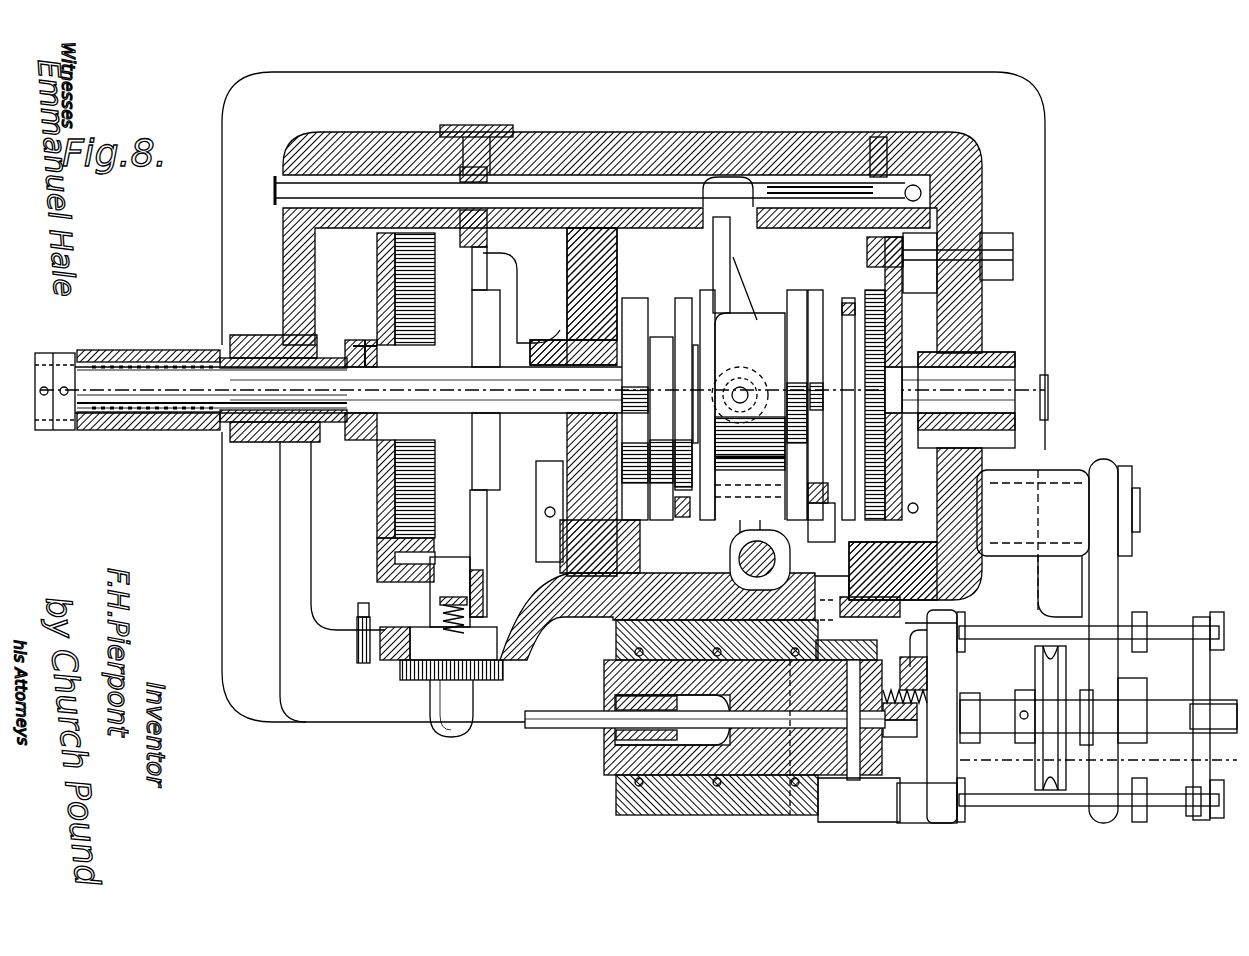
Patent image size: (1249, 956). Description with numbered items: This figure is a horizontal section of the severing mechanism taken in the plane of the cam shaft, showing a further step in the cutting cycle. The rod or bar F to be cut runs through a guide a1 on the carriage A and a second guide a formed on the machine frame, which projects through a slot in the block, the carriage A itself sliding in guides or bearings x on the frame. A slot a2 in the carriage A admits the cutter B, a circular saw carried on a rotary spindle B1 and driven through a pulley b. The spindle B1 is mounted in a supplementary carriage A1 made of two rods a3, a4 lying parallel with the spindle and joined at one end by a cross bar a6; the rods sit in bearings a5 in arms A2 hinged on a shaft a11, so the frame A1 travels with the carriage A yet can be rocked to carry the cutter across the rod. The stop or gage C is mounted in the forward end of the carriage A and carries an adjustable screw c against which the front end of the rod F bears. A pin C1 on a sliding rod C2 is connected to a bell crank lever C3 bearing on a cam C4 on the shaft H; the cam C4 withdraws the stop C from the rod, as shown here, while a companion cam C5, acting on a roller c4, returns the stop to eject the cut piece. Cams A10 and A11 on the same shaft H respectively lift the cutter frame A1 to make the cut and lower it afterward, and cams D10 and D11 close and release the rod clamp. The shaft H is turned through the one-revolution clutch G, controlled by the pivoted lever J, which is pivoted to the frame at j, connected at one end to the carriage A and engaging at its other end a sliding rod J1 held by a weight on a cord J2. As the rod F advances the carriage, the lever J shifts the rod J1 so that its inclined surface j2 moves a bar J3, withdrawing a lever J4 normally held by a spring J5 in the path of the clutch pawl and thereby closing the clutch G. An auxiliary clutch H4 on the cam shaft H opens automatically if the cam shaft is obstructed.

The clutch G is at (300, 448).
The cam shaft H is at (1016, 360).
The auxiliary clutch H4 is at (489, 397).
The pivoted lever J is at (735, 257).
The sliding rod J1 is at (641, 310).
The cord J2 is at (921, 193).
The bar J3 is at (500, 135).
The lever J4 is at (430, 655).
The spring J5 is at (455, 705).
The pivot j is at (748, 480).
The inclined surface j2 is at (423, 190).
The carriage A is at (614, 768).
The supplementary carriage A1 is at (992, 806).
The arms A2 is at (945, 822).
The cam A10 is at (627, 330).
The companion cam A11 is at (823, 490).
The second guide a is at (614, 738).
The guide a1 is at (790, 815).
The slot a2 is at (890, 818).
The rod a3 is at (1060, 634).
The rod a4 is at (1027, 800).
The bearings a5 is at (1137, 652).
The cross bar a6 is at (771, 816).
The shaft a11 is at (1136, 514).
The cutter B is at (853, 781).
The rotary spindle B1 is at (990, 716).
The pulley b is at (1048, 755).
The stop C is at (963, 644).
The pin C1 is at (905, 627).
The sliding rod C2 is at (901, 534).
The bell crank lever C3 is at (905, 500).
The cam C4 is at (900, 545).
The companion cam C5 is at (850, 495).
The adjustable screw c is at (923, 690).
The roller c4 is at (838, 515).
The cam D10 is at (1000, 245).
The cam D11 is at (1005, 265).
The rod F is at (552, 712).
The guides x is at (695, 660).